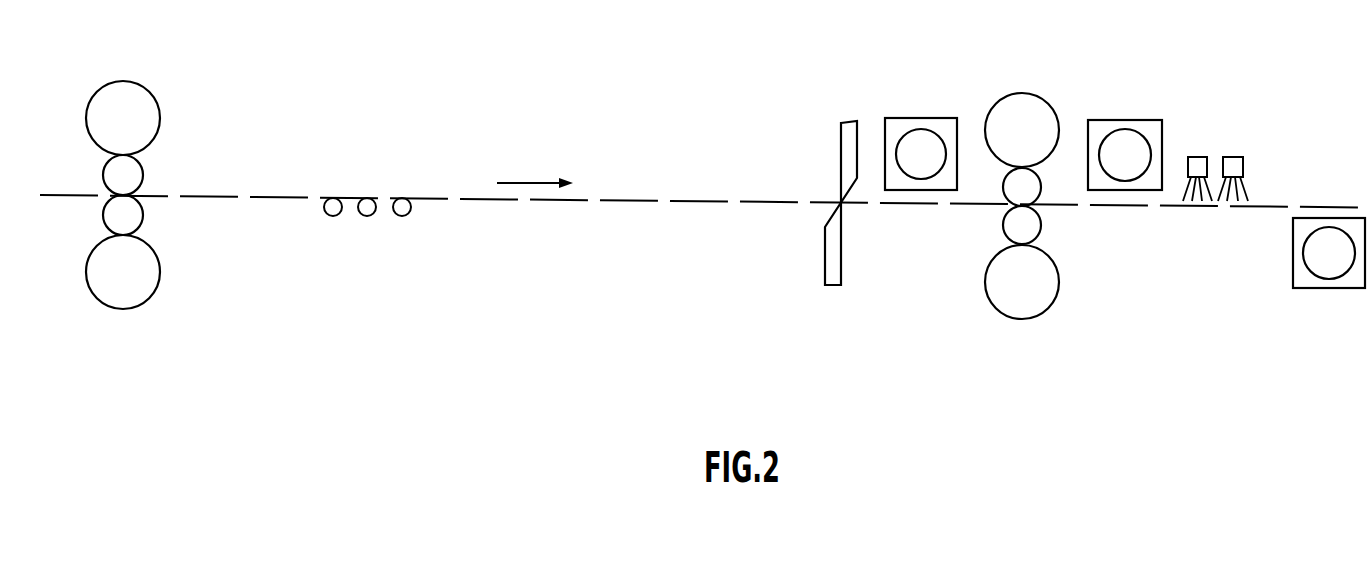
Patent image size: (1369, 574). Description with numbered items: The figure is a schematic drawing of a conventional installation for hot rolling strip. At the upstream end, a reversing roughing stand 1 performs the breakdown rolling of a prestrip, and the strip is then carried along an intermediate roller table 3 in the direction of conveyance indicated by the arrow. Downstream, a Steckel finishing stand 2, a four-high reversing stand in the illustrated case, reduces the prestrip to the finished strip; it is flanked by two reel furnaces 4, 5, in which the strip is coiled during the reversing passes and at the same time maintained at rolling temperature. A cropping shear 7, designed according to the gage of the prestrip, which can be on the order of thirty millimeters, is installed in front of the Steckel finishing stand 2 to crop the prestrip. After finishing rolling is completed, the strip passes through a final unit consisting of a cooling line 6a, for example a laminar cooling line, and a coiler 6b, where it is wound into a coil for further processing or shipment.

The reversing roughing stand 1 is at (161, 79).
The Steckel finishing stand 2 is at (1048, 76).
The intermediate roller table 3 is at (382, 238).
The reel furnace 4 is at (926, 96).
The reel furnace 5 is at (1131, 98).
The cooling line 6a is at (1227, 136).
The coiler 6b is at (1320, 306).
The cropping shear 7 is at (822, 308).